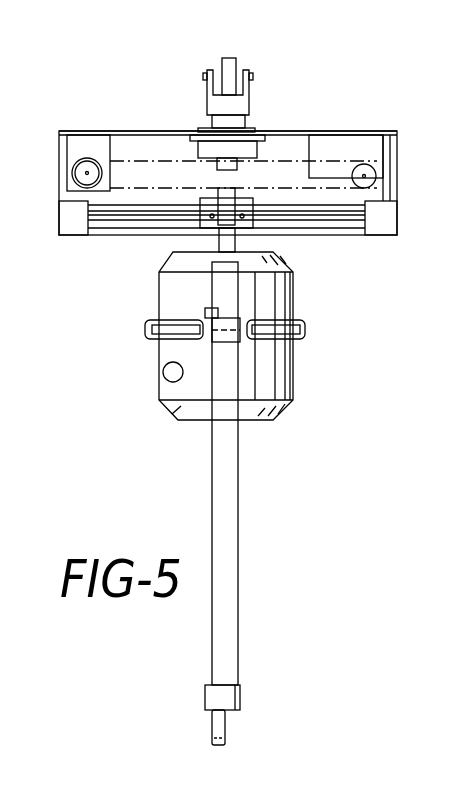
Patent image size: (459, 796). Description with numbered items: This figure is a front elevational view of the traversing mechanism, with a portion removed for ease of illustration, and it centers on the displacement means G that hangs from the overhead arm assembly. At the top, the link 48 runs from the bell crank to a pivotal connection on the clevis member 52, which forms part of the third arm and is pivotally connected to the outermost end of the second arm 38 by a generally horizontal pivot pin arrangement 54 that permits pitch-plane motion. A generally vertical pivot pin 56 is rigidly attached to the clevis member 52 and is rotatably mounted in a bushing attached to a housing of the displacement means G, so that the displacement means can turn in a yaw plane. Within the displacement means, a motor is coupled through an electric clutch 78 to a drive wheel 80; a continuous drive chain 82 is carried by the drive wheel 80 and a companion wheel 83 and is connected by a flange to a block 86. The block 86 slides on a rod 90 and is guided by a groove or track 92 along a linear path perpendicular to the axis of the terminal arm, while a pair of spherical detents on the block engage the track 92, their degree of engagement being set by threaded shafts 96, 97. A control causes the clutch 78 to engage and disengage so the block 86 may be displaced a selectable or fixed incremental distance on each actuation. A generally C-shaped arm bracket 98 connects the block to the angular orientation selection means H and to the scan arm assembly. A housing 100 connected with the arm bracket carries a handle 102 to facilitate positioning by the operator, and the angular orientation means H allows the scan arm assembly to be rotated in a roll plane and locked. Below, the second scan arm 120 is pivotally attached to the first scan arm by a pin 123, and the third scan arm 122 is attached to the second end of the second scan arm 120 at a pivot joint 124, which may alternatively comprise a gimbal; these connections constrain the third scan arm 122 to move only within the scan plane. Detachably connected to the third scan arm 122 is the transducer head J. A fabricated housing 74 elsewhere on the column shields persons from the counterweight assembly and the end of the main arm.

The displacement means G is at (54, 126).
The fabricated housing 74 is at (409, 140).
The pivot pin 56 is at (97, 131).
The continuous drive chain 82 is at (132, 160).
The drive wheel 80 is at (68, 190).
The electric clutch 78 is at (72, 168).
The companion wheel 83 is at (363, 164).
The link 48 is at (254, 115).
The clevis member 52 is at (250, 70).
The second arm 38 is at (232, 58).
The pivot pin arrangement 54 is at (203, 77).
The track 92 is at (340, 217).
The rod 90 is at (110, 233).
The block 86 is at (200, 228).
The threaded shaft 96 is at (208, 212).
The threaded shaft 97 is at (252, 206).
The arm bracket 98 is at (222, 243).
The angular orientation selection means H is at (128, 349).
The housing 100 is at (277, 373).
The handle 102 is at (305, 334).
The pin 123 is at (232, 320).
The second scan arm 120 is at (238, 574).
The pivot joint 124 is at (228, 695).
The third scan arm 122 is at (225, 727).
The transducer head J is at (194, 728).